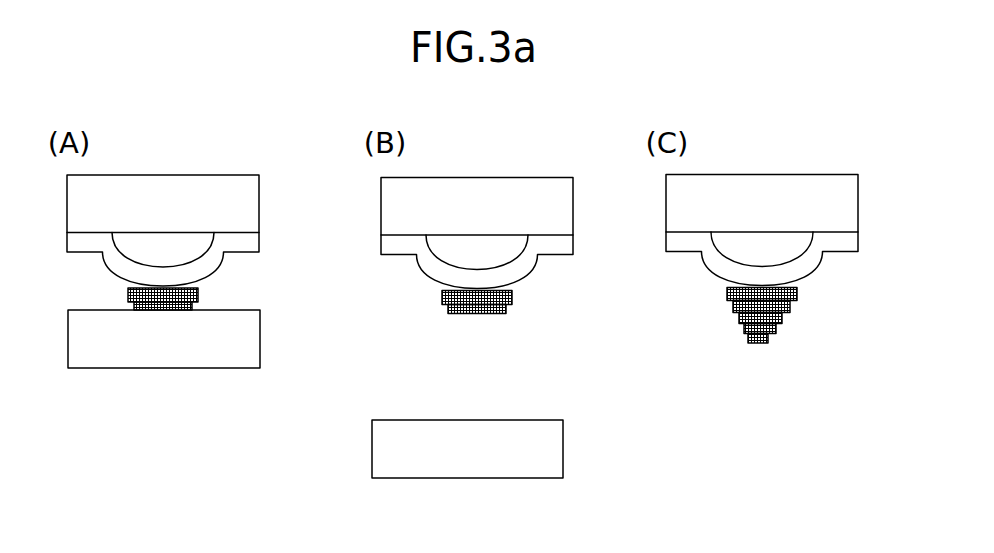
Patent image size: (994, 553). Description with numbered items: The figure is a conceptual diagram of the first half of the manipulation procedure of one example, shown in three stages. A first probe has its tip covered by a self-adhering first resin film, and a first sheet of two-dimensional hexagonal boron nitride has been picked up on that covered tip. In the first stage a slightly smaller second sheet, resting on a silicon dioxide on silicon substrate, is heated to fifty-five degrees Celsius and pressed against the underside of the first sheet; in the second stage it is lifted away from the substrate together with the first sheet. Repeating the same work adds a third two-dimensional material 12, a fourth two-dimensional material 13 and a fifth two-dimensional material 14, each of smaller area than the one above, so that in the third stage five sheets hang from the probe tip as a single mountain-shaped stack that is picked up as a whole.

The two-dimensional material (hexagonal boron nitride) 12 is at (782, 322).
The two-dimensional material (hexagonal boron nitride) 13 is at (745, 330).
The two-dimensional material (hexagonal boron nitride) 14 is at (759, 344).